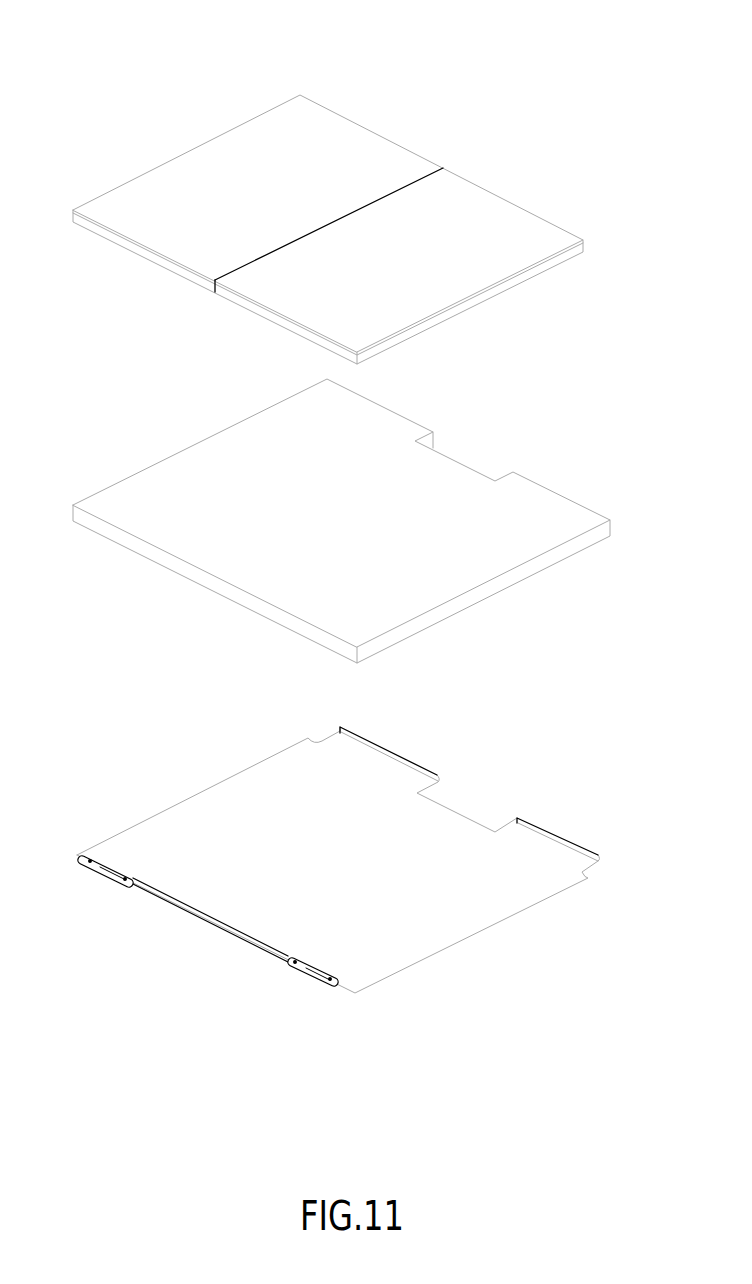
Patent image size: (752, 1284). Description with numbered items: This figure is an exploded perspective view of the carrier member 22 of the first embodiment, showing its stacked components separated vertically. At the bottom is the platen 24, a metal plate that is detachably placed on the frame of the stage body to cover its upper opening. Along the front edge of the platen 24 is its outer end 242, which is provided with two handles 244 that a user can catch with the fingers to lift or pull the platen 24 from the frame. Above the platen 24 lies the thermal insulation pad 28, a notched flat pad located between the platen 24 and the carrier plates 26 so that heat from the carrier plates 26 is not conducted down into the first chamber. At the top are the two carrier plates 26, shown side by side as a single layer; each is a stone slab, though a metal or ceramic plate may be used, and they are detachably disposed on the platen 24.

The carrier member 22 is at (582, 74).
The carrier plate 26 is at (370, 150).
The thermal insulation pad 28 is at (537, 518).
The platen 24 is at (555, 856).
The outer end 242 is at (205, 918).
The handle 244 is at (118, 882).